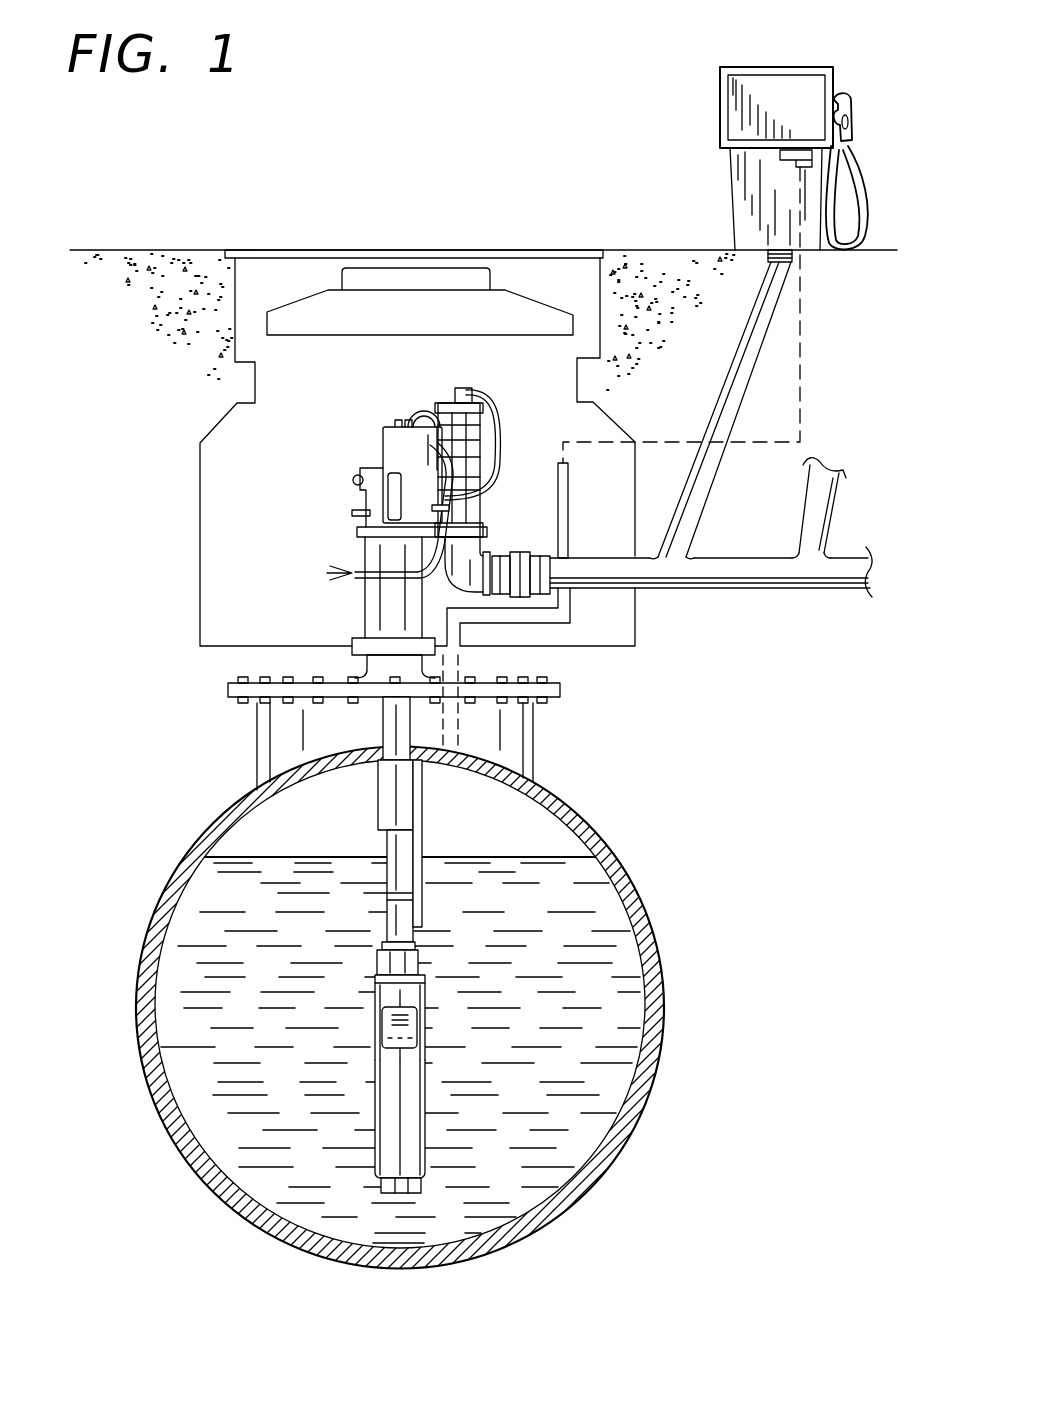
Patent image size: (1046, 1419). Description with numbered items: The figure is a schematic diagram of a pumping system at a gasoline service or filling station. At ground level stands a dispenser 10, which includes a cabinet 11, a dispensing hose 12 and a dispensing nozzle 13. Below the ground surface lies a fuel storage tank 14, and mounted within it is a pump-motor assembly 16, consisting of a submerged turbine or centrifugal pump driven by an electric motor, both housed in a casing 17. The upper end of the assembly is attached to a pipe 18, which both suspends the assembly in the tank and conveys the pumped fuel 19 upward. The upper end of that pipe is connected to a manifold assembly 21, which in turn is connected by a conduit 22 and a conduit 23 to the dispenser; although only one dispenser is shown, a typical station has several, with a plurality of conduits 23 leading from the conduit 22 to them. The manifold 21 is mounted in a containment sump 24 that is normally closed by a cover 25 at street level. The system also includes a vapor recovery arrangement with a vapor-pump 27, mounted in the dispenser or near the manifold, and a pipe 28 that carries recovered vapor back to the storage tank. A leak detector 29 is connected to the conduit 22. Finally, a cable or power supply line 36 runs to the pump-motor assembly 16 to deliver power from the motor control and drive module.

The dispenser 10 is at (690, 108).
The cabinet 11 is at (778, 67).
The dispensing hose 12 is at (868, 207).
The dispensing nozzle 13 is at (838, 100).
The fuel storage tank 14 is at (640, 892).
The pump-motor assembly 16 is at (453, 1037).
The casing 17 is at (407, 1138).
The pipe 18 is at (390, 848).
The pumped fuel 19 is at (510, 870).
The manifold assembly 21 is at (345, 527).
The conduit 22 is at (783, 597).
The conduit 23 is at (812, 497).
The containment sump 24 is at (200, 497).
The cover 25 is at (298, 250).
The vapor-pump 27 is at (782, 158).
The pipe 28 is at (572, 510).
The leak detector 29 is at (450, 412).
The cable or power supply line 36 is at (423, 832).